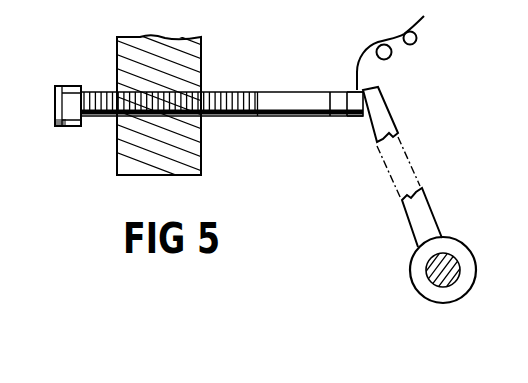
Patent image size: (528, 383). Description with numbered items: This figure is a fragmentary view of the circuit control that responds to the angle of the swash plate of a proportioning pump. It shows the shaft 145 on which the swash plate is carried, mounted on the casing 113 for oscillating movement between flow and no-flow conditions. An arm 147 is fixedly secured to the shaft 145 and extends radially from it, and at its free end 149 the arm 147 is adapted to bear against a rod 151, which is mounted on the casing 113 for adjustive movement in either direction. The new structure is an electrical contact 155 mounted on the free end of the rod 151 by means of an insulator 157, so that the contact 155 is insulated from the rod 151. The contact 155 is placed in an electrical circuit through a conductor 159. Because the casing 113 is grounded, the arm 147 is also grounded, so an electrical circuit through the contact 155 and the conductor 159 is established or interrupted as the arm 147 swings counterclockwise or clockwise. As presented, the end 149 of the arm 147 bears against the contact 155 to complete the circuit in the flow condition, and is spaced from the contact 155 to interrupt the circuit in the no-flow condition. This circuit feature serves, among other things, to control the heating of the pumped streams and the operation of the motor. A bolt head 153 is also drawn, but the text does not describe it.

The casing 113 is at (199, 64).
The bolt head 153 is at (59, 127).
The rod 151 is at (295, 117).
The insulator 157 is at (338, 95).
The electrical contact 155 is at (364, 117).
The free end 149 is at (389, 107).
The arm 147 is at (430, 216).
The shaft 145 is at (461, 268).
The conductor 159 is at (418, 39).